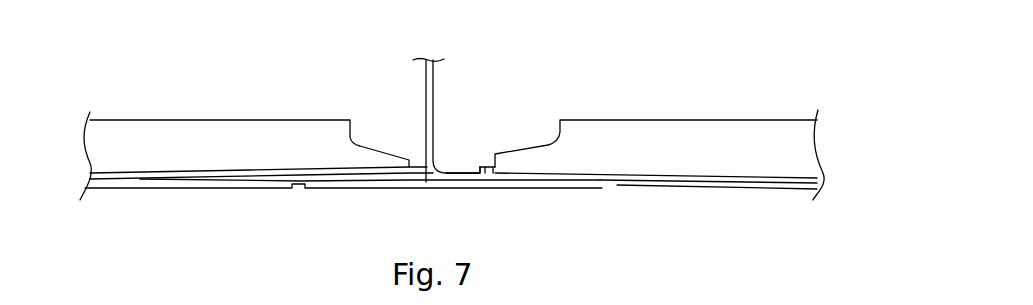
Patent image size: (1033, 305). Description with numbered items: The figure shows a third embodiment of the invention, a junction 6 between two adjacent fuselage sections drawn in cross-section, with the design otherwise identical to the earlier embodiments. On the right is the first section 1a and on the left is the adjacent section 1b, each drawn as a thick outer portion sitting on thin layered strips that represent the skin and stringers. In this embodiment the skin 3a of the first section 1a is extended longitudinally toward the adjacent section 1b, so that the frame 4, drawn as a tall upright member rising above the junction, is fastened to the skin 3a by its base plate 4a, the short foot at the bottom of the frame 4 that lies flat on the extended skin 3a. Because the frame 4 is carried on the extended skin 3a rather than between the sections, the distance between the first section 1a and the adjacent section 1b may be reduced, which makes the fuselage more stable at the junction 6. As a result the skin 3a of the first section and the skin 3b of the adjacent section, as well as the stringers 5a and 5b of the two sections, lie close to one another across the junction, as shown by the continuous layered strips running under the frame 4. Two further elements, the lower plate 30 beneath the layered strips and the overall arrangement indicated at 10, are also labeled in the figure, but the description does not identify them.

The adjacent section 1b is at (215, 94).
The first section 1a is at (627, 94).
The junction 6 is at (500, 75).
The frame 4 is at (435, 93).
The base plate 4a is at (481, 164).
The skin 3a is at (488, 165).
The skin 3b is at (235, 168).
The stringer 5a is at (675, 172).
The stringer 5b is at (137, 168).
The carrier plate 30 is at (488, 190).
The assembly 10 is at (546, 197).